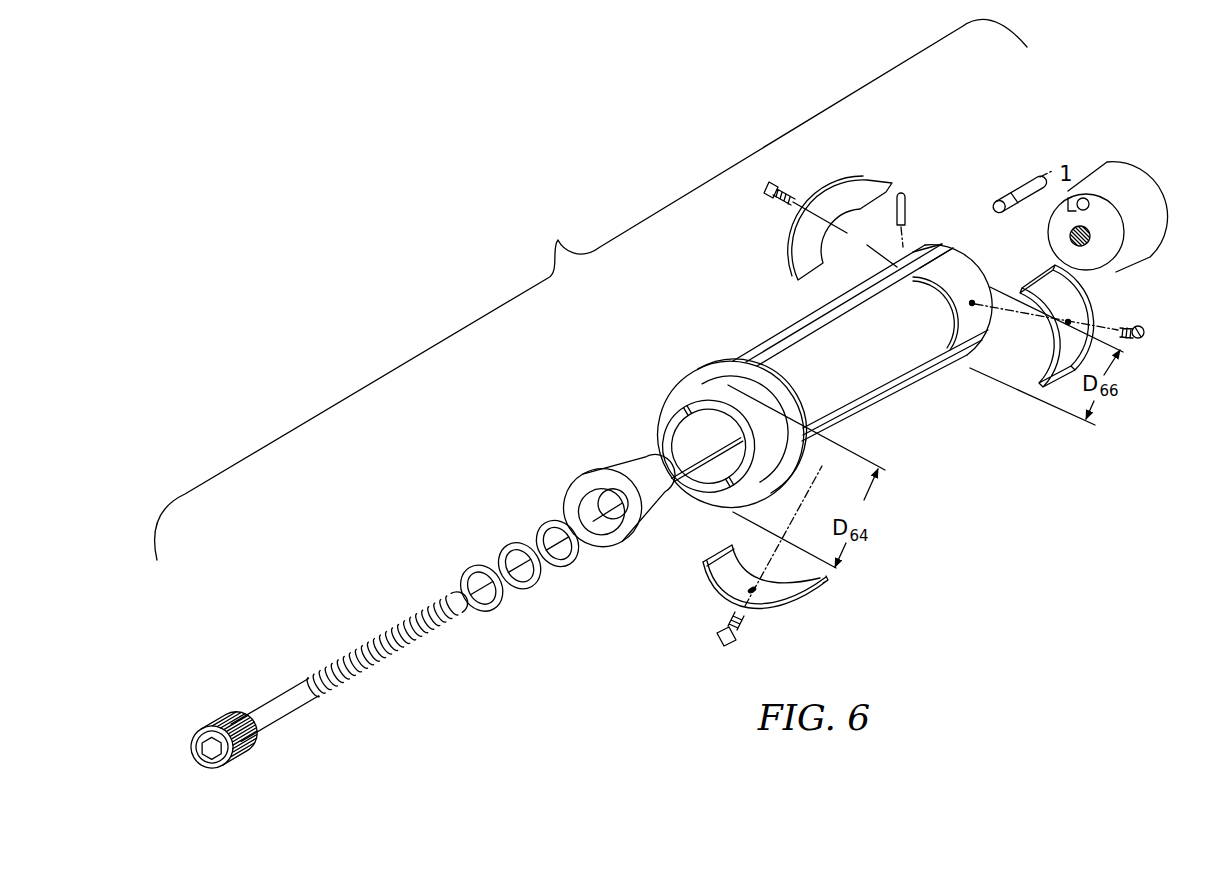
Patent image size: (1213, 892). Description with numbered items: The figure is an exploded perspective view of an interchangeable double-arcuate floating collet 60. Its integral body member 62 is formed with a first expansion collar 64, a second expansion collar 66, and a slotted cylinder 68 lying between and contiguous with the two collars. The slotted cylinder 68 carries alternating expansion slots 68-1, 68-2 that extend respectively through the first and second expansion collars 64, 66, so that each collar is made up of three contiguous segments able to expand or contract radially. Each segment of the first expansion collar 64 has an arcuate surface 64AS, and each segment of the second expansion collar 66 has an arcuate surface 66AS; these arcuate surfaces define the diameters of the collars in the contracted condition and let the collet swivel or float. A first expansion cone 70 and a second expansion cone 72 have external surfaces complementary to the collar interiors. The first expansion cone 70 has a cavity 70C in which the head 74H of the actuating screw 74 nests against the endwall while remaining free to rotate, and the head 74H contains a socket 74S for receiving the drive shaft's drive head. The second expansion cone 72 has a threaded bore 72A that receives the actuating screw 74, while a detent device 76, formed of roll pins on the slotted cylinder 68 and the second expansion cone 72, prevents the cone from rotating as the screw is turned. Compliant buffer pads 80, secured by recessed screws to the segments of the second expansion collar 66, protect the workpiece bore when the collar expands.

The double-arcuate floating collet 60 is at (591, 289).
The body member 62 is at (756, 339).
The first expansion collar 64 is at (660, 392).
The arcuate surface 64AS is at (684, 400).
The second expansion collar 66 is at (935, 241).
The arcuate surface 66AS is at (985, 272).
The slotted cylinder 68 is at (860, 350).
The expansion slot 68-1 is at (872, 405).
The expansion slot 68-2 is at (875, 310).
The first expansion cone 70 is at (560, 493).
The cavity 70C is at (603, 525).
The second expansion cone 72 is at (1112, 178).
The threaded bore 72A is at (1086, 247).
The actuating screw 74 is at (327, 702).
The head 74H is at (209, 714).
The socket 74S is at (215, 757).
The detent device 76 is at (1007, 190).
The buffer pads 80 is at (790, 243).